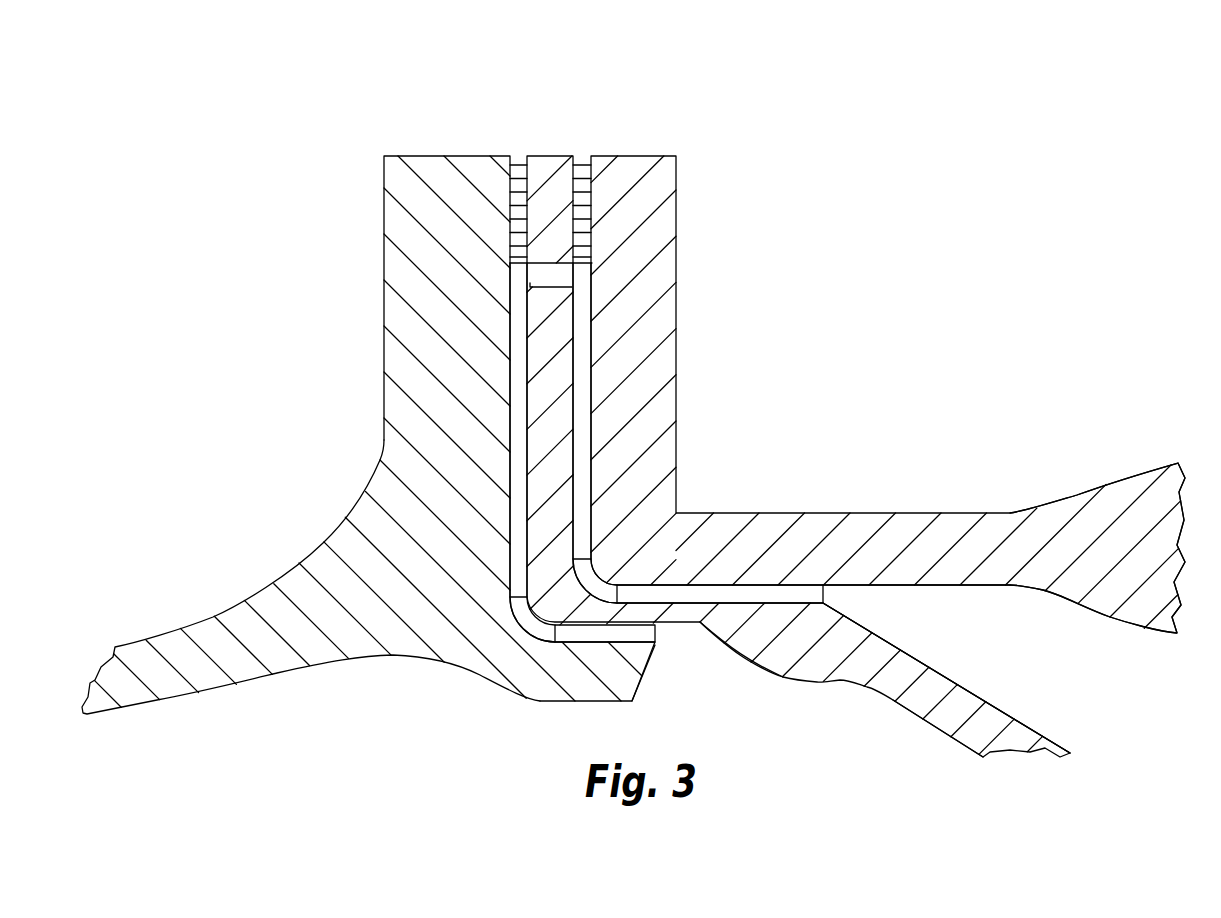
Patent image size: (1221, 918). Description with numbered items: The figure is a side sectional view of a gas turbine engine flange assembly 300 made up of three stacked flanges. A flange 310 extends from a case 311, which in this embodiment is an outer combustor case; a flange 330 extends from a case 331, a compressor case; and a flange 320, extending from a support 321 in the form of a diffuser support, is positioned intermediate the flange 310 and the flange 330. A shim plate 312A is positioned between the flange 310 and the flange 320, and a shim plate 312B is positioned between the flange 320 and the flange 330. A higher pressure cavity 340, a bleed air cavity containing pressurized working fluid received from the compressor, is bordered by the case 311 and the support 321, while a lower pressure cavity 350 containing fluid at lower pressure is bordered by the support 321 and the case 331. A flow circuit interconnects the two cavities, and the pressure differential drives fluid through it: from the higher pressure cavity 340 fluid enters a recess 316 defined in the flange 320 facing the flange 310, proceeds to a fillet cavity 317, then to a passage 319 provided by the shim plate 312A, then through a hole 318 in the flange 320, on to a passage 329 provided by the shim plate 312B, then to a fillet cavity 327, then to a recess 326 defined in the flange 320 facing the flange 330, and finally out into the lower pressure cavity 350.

The flange assembly 300 is at (913, 150).
The flange 310 is at (648, 182).
The case 311 is at (1010, 512).
The shim plate 312A is at (581, 170).
The shim plate 312B is at (520, 166).
The recess 316 is at (752, 593).
The fillet cavity 317 is at (600, 563).
The hole 318 is at (570, 275).
The passage 319 is at (578, 380).
The flange 320 is at (553, 177).
The support 321 is at (925, 693).
The recess 326 is at (655, 633).
The fillet cavity 327 is at (530, 623).
The passage 329 is at (517, 367).
The flange 330 is at (402, 178).
The case 331 is at (188, 700).
The higher pressure cavity 340 is at (1023, 657).
The lower pressure cavity 350 is at (810, 719).